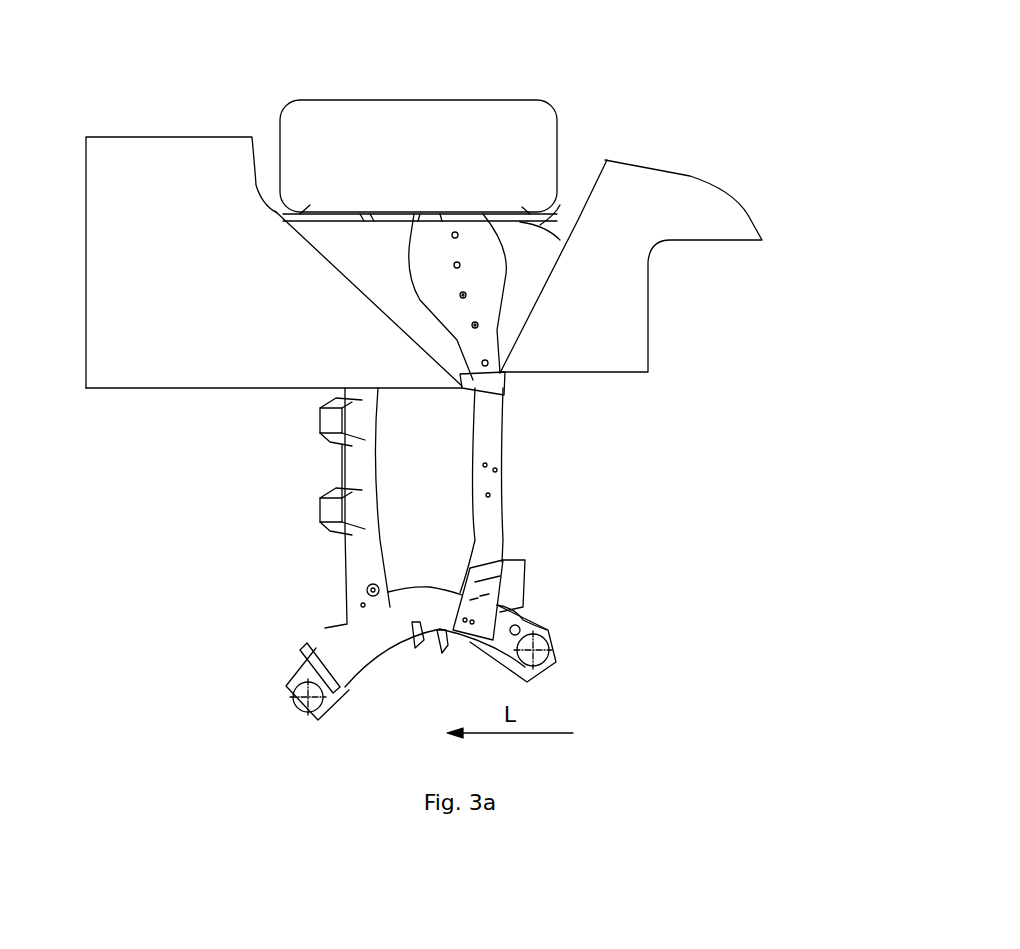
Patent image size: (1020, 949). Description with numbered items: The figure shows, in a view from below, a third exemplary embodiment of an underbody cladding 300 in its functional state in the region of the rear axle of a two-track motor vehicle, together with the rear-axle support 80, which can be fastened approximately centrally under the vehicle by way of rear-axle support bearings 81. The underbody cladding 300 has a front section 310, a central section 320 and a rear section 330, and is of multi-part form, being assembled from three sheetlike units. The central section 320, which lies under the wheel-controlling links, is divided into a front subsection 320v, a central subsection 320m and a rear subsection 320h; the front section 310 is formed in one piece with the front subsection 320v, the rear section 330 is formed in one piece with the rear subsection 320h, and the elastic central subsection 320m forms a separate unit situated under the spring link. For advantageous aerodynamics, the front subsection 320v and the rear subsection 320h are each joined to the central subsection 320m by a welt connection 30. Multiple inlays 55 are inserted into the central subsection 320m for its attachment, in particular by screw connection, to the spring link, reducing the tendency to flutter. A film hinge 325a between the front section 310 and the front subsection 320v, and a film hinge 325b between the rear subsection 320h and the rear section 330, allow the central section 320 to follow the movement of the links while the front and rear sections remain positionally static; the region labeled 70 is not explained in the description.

The underbody cladding 300 is at (703, 155).
The front section 310 is at (203, 359).
The central section 320 is at (552, 55).
The rear subsection 320h is at (558, 237).
The front subsection 320v is at (330, 238).
The central subsection 320m is at (480, 238).
The film hinge 325a is at (298, 240).
The film hinge 325b is at (557, 250).
The rear section 330 is at (611, 314).
The hood inner panel 70 is at (406, 164).
The inlays 55 is at (455, 266).
The welt connection 30 is at (452, 296).
The rear-axle support 80 is at (496, 431).
The rear-axle support bearings 81 is at (297, 708).